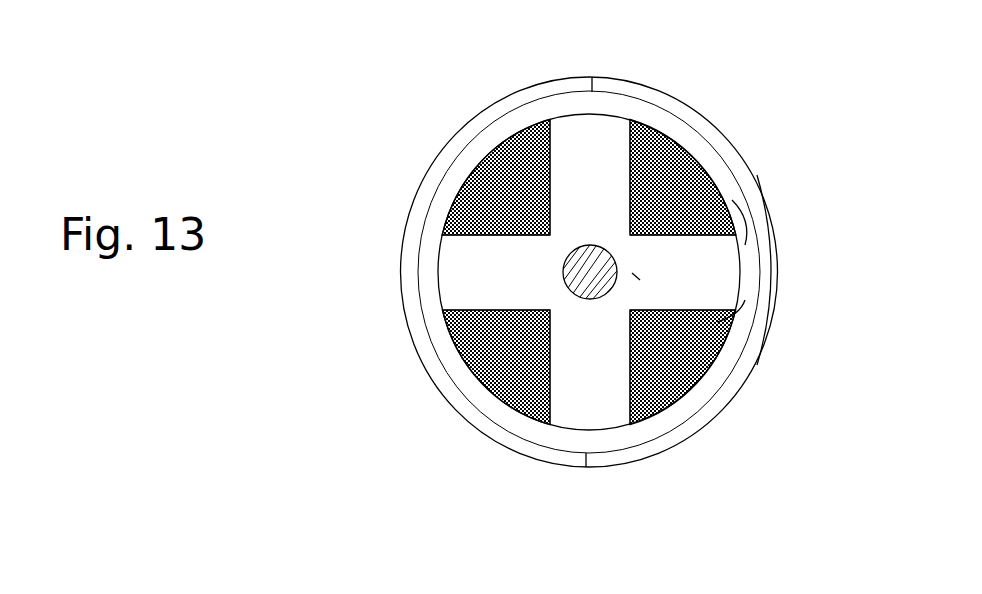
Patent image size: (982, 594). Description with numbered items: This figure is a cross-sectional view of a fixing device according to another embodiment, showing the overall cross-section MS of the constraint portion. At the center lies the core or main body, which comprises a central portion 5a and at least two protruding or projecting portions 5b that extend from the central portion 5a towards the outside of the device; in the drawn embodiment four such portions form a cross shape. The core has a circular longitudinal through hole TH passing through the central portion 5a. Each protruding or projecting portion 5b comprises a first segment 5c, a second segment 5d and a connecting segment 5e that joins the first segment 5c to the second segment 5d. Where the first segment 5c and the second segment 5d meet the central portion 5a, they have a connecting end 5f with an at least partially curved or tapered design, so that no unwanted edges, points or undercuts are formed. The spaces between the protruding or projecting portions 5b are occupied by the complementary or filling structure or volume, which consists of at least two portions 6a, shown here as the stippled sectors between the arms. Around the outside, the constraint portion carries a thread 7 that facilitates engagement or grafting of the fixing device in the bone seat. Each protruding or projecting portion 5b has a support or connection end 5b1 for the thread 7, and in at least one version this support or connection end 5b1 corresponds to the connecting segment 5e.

The overall cross-section MS is at (352, 277).
The thread 7 is at (672, 118).
The central portion 5a is at (573, 298).
The protruding or projecting portion 5b is at (590, 122).
The support or connection end 5b1 is at (594, 92).
The first segment 5c is at (732, 200).
The second segment 5d is at (717, 322).
The connecting segment 5e is at (748, 250).
The connecting end 5f is at (632, 273).
The portion of the complementary or filling structure 6a is at (487, 205).
The longitudinal through hole TH is at (583, 263).